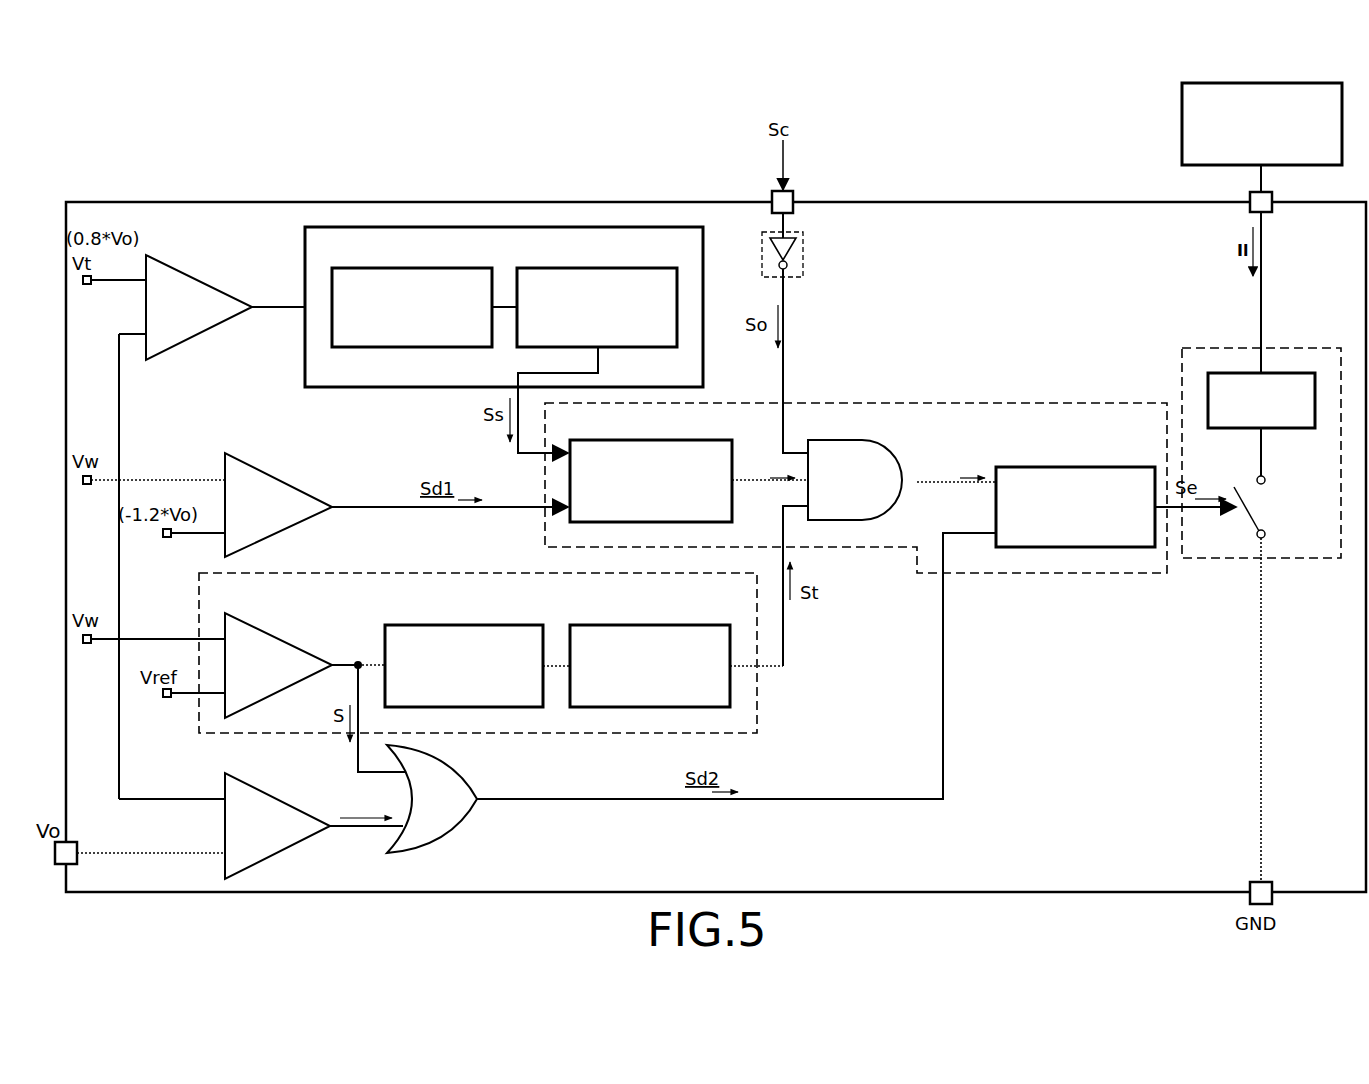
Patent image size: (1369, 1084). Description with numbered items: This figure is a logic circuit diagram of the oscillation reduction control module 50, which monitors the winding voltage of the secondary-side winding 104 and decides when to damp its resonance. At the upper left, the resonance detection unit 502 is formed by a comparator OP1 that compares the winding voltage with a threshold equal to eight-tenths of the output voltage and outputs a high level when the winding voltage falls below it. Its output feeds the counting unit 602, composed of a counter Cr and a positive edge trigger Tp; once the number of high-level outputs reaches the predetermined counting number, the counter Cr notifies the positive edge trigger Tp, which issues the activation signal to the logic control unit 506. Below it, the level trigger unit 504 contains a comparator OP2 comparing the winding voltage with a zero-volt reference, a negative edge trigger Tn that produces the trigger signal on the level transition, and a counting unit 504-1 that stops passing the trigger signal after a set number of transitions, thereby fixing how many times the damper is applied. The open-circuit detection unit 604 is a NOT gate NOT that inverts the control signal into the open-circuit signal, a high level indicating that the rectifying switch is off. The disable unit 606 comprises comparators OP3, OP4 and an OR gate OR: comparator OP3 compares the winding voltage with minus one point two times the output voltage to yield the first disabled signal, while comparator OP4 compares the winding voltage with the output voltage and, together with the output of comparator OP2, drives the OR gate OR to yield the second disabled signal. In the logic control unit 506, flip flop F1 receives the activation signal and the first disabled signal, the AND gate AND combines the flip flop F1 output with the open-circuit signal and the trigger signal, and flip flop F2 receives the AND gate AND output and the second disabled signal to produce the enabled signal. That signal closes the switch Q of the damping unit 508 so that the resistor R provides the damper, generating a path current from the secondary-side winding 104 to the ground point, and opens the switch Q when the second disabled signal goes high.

The oscillation reduction control module 50 is at (1025, 202).
The secondary-side winding 104 is at (1262, 95).
The resonance detection unit 502 is at (219, 313).
The counting unit 602 is at (504, 325).
The open-circuit detection unit 604 is at (829, 265).
The logic control unit 506 is at (856, 448).
The damping unit 508 is at (1240, 436).
The level trigger unit 504 is at (531, 660).
The counting unit 504-1 is at (645, 625).
The disable unit 606 is at (421, 815).
The comparator OP1 is at (197, 285).
The comparator OP2 is at (280, 632).
The comparator OP3 is at (280, 470).
The comparator OP4 is at (280, 790).
The counter Cr is at (440, 268).
The positive edge trigger Tp is at (600, 268).
The negative edge trigger Tn is at (468, 625).
The flip flop F1 is at (660, 440).
The flip flop F2 is at (1085, 467).
The AND gate AND is at (855, 440).
The OR gate OR is at (455, 773).
The NOT gate NOT is at (801, 245).
The switch Q is at (1257, 483).
The resistor R is at (1290, 428).